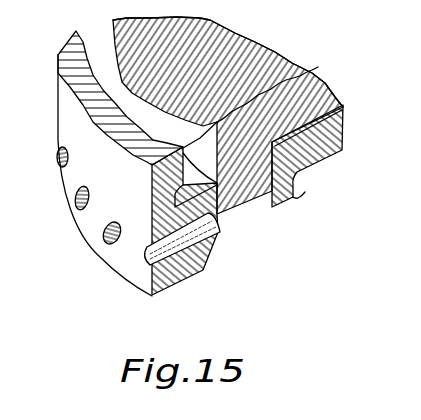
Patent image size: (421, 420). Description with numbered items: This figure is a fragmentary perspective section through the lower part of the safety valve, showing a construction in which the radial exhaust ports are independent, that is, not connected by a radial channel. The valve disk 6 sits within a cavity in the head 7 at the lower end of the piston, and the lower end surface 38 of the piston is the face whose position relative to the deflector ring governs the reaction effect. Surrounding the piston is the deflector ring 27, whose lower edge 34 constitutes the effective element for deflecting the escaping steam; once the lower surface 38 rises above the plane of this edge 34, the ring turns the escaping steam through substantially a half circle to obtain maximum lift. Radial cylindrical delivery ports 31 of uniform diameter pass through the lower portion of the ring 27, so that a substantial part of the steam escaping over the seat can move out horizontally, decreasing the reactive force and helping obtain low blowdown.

The head of piston 7 is at (318, 85).
The valve disk 6 is at (316, 160).
The lower end surface of piston 38 is at (248, 197).
The deflector ring 27 is at (128, 271).
The lower edge of deflector ring 34 is at (175, 281).
The delivery ports 31 is at (213, 237).